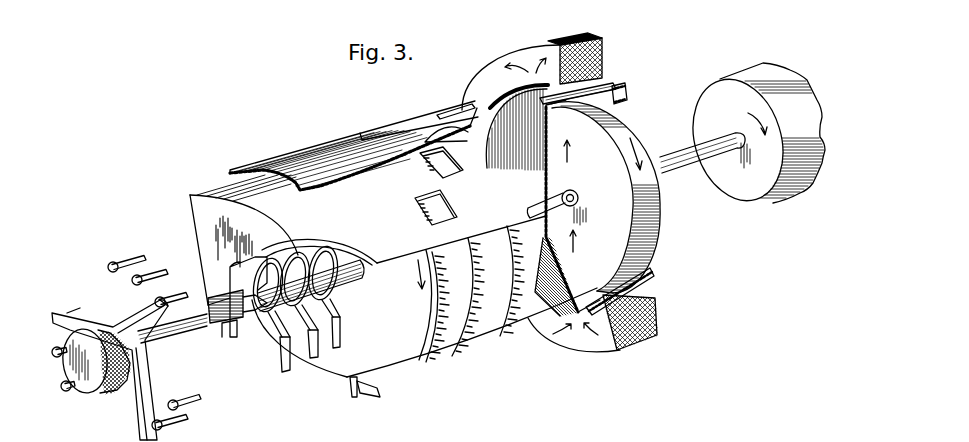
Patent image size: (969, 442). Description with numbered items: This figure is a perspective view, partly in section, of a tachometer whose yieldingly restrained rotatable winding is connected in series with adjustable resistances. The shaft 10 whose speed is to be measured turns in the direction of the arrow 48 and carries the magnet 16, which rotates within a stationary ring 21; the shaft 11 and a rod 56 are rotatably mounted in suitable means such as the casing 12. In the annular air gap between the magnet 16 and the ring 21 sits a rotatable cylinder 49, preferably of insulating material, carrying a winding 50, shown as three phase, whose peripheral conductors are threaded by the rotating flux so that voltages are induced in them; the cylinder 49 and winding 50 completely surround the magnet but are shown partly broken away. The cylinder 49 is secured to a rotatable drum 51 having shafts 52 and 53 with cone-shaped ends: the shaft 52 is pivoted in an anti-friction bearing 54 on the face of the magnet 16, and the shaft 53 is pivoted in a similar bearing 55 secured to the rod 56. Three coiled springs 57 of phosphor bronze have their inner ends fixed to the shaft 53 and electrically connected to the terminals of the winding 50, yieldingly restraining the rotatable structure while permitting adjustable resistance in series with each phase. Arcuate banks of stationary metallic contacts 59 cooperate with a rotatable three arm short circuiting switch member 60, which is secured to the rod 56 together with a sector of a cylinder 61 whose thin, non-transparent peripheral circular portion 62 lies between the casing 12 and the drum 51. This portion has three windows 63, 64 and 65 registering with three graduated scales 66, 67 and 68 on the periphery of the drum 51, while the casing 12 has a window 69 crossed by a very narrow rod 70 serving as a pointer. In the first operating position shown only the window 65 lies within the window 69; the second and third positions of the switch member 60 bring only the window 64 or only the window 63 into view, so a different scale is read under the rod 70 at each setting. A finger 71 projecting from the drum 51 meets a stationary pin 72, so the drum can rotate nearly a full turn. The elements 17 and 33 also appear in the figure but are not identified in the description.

The shaft 10 is at (752, 137).
The shaft 11 is at (686, 165).
The casing 12 is at (297, 158).
The magnet 16 is at (636, 133).
The flux direction arrows 17 is at (570, 149).
The ring 21 is at (503, 59).
The adjusting knob 33 is at (89, 392).
The arrow 48 is at (748, 113).
The rotatable cylinder 49 is at (604, 85).
The winding 50 is at (630, 100).
The rotatable drum 51 is at (424, 308).
The shaft 52 is at (556, 207).
The shaft 53 is at (244, 297).
The anti-friction bearing 54 is at (579, 201).
The bearing 55 is at (245, 325).
The rod 56 is at (176, 336).
The coiled springs 57 is at (278, 320).
The stationary metallic contacts 59 is at (114, 260).
The switch member 60 is at (126, 411).
The sector of a cylinder 61 is at (192, 219).
The peripheral circular portion 62 is at (368, 240).
The window 63 is at (433, 219).
The window 64 is at (453, 172).
The window 65 is at (456, 139).
The graduated scale 66 is at (430, 360).
The graduated scale 67 is at (476, 342).
The graduated scale 68 is at (513, 329).
The window 69 is at (392, 130).
The rod 70 is at (419, 120).
The finger 71 is at (351, 382).
The stationary pin 72 is at (370, 392).